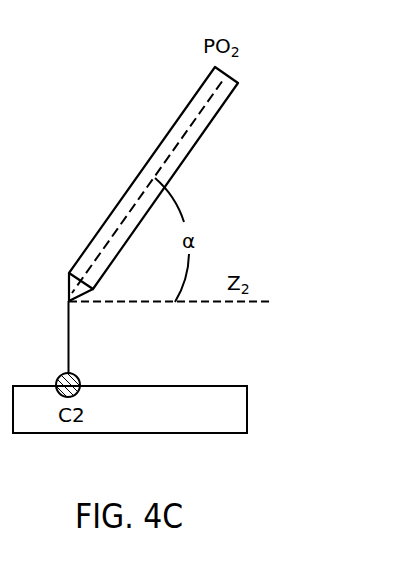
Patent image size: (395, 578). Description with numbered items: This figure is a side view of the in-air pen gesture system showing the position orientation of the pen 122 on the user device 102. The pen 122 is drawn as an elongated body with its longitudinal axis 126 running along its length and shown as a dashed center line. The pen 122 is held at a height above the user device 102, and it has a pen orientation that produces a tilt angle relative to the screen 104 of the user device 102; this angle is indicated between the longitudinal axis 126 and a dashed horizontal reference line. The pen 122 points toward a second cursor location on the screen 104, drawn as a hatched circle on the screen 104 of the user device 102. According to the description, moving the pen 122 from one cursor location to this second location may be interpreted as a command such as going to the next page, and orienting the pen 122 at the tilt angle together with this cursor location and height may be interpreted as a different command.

The user device 102 is at (192, 434).
The screen 104 is at (192, 385).
The pen 122 is at (182, 165).
The longitudinal axis 126 is at (193, 118).